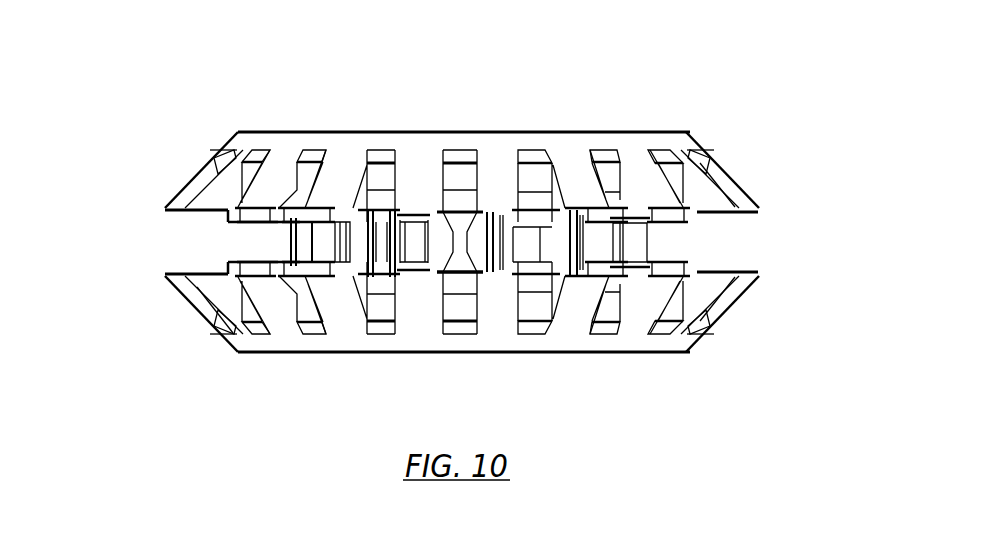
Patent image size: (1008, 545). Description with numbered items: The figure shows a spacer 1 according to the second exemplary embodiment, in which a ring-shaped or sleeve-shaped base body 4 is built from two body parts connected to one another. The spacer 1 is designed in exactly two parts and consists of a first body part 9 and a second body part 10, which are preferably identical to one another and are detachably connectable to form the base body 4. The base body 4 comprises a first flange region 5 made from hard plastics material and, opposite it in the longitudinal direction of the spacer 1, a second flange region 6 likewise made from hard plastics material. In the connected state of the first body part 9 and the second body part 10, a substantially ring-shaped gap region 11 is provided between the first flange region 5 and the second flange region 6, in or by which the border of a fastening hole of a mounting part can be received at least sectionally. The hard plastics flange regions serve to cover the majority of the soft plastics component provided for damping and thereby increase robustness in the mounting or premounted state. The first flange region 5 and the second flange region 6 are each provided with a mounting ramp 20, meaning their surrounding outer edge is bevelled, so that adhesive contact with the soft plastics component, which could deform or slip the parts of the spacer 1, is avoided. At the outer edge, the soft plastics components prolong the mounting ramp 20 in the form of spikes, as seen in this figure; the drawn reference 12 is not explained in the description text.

The spacer 1 is at (222, 93).
The base body 4 is at (95, 120).
The first flange region 5 is at (622, 133).
The second flange region 6 is at (610, 352).
The first body part 9 is at (195, 156).
The second body part 10 is at (196, 314).
The gap region 11 is at (150, 213).
The contact finger 12 is at (710, 210).
The mounting ramp 20 is at (720, 167).